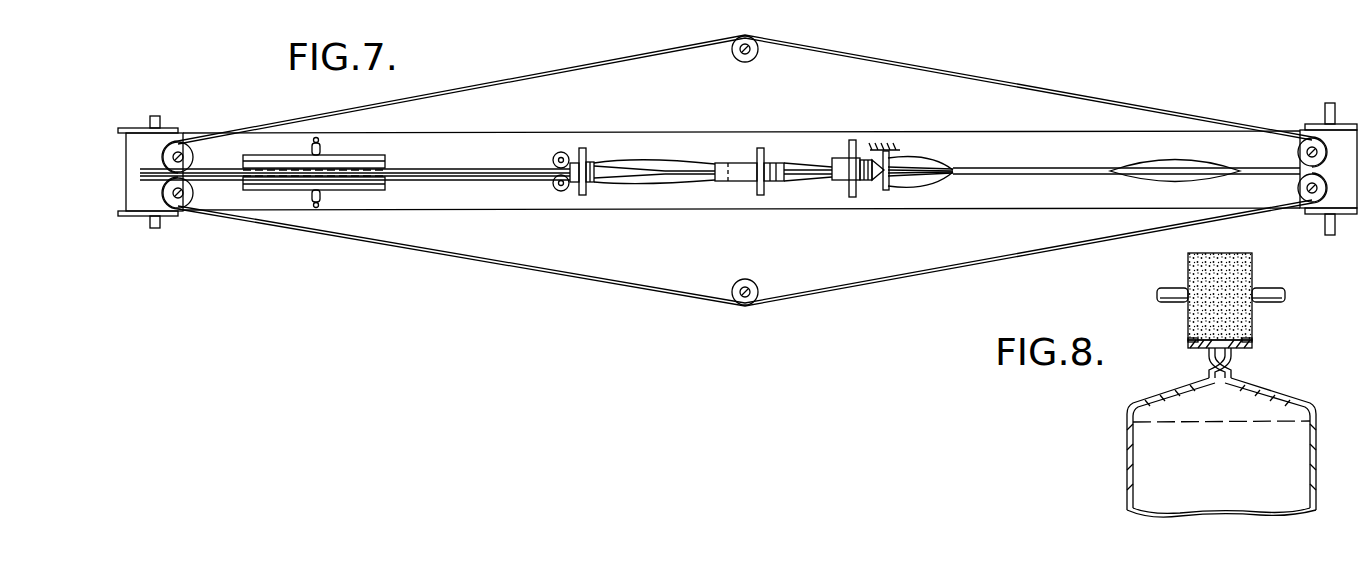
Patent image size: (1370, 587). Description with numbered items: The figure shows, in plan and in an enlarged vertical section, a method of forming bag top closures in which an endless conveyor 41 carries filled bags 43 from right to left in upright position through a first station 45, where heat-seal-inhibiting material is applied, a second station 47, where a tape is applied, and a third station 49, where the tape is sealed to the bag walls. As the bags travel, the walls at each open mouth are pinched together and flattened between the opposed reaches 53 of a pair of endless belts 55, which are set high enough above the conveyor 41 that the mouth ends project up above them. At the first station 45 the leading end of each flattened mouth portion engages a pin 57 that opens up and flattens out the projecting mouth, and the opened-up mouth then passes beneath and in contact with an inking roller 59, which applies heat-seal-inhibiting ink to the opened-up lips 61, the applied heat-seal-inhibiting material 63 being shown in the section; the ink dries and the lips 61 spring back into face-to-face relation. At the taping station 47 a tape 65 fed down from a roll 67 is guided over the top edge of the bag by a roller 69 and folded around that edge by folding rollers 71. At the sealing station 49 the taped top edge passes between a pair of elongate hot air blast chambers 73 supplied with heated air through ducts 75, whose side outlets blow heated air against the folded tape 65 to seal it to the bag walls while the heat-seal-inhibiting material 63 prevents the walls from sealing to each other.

In FIG. 7, the endless conveyor 41 is at (126, 128).
In FIG. 7, the filled bags 43 is at (650, 156).
In FIG. 8, the filled bags 43 is at (1122, 461).
In FIG. 7, the first station 45 is at (870, 192).
In FIG. 7, the second station 47 is at (576, 198).
In FIG. 7, the third station 49 is at (278, 192).
In FIG. 7, the opposed reaches 53 is at (495, 166).
In FIG. 8, the opposed reaches 53 is at (1210, 366).
In FIG. 7, the endless belts 55 is at (922, 64).
In FIG. 7, the pin 57 is at (890, 190).
In FIG. 7, the inking roller 59 is at (842, 158).
In FIG. 8, the inking roller 59 is at (1188, 266).
In FIG. 8, the opened-up lips 61 is at (1192, 345).
In FIG. 8, the heat-seal-inhibiting material 63 is at (1190, 344).
In FIG. 7, the tape 65 is at (722, 182).
In FIG. 7, the roll 67 is at (773, 160).
In FIG. 7, the roller 69 is at (595, 182).
In FIG. 7, the folding rollers 71 is at (556, 160).
In FIG. 7, the hot air blast chambers 73 is at (375, 155).
In FIG. 7, the ducts 75 is at (325, 140).